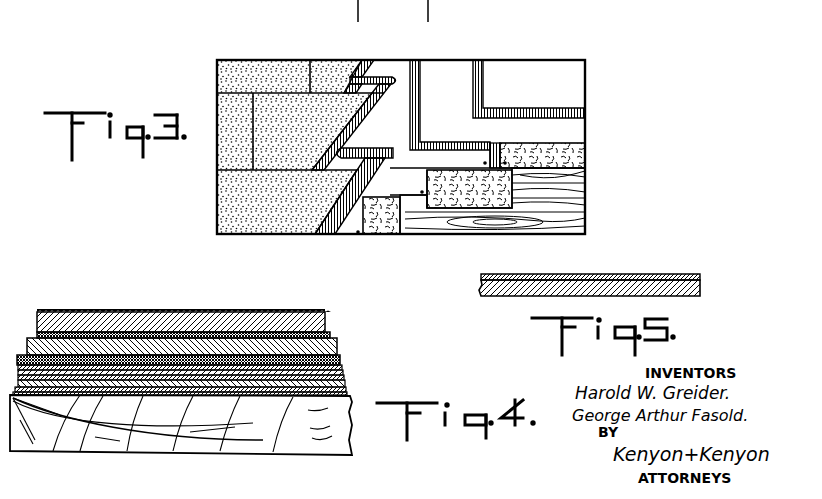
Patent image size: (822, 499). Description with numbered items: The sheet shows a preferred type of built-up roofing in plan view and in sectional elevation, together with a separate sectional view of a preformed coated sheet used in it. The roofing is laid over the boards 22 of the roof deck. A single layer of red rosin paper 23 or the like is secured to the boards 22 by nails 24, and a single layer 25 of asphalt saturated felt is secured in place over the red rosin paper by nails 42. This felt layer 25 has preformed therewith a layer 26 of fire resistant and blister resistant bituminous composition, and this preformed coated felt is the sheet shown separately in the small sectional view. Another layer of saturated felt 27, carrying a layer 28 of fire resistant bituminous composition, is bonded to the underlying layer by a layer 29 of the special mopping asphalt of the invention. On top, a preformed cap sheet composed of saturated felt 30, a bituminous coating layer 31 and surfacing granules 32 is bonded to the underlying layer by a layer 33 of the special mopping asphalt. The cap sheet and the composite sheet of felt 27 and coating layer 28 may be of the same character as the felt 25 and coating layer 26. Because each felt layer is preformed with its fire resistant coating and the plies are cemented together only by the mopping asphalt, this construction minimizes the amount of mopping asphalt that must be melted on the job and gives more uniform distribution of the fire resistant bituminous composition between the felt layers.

In FIG. 3, the boards 22 is at (567, 228).
In FIG. 4, the boards 22 is at (313, 447).
In FIG. 3, the red rosin paper 23 is at (570, 160).
In FIG. 4, the red rosin paper 23 is at (347, 390).
In FIG. 3, the nails 24 is at (400, 200).
In FIG. 3, the asphalt saturated felt layer 25 is at (392, 179).
In FIG. 4, the asphalt saturated felt layer 25 is at (347, 380).
In FIG. 5, the asphalt saturated felt layer 25 is at (692, 290).
In FIG. 4, the fire resistant bituminous composition layer 26 is at (343, 375).
In FIG. 5, the fire resistant bituminous composition layer 26 is at (670, 278).
In FIG. 4, the saturated felt 27 is at (340, 365).
In FIG. 3, the fire resistant bituminous composition layer 28 is at (453, 72).
In FIG. 4, the fire resistant bituminous composition layer 28 is at (335, 360).
In FIG. 3, the special mopping asphalt layer 29 is at (417, 72).
In FIG. 4, the special mopping asphalt layer 29 is at (342, 370).
In FIG. 4, the saturated felt 30 is at (280, 330).
In FIG. 4, the bituminous coating layer 31 is at (212, 317).
In FIG. 3, the surfacing granules 32 is at (250, 58).
In FIG. 4, the surfacing granules 32 is at (140, 310).
In FIG. 4, the special mopping asphalt layer 33 is at (332, 345).
In FIG. 3, the nails 42 is at (433, 197).